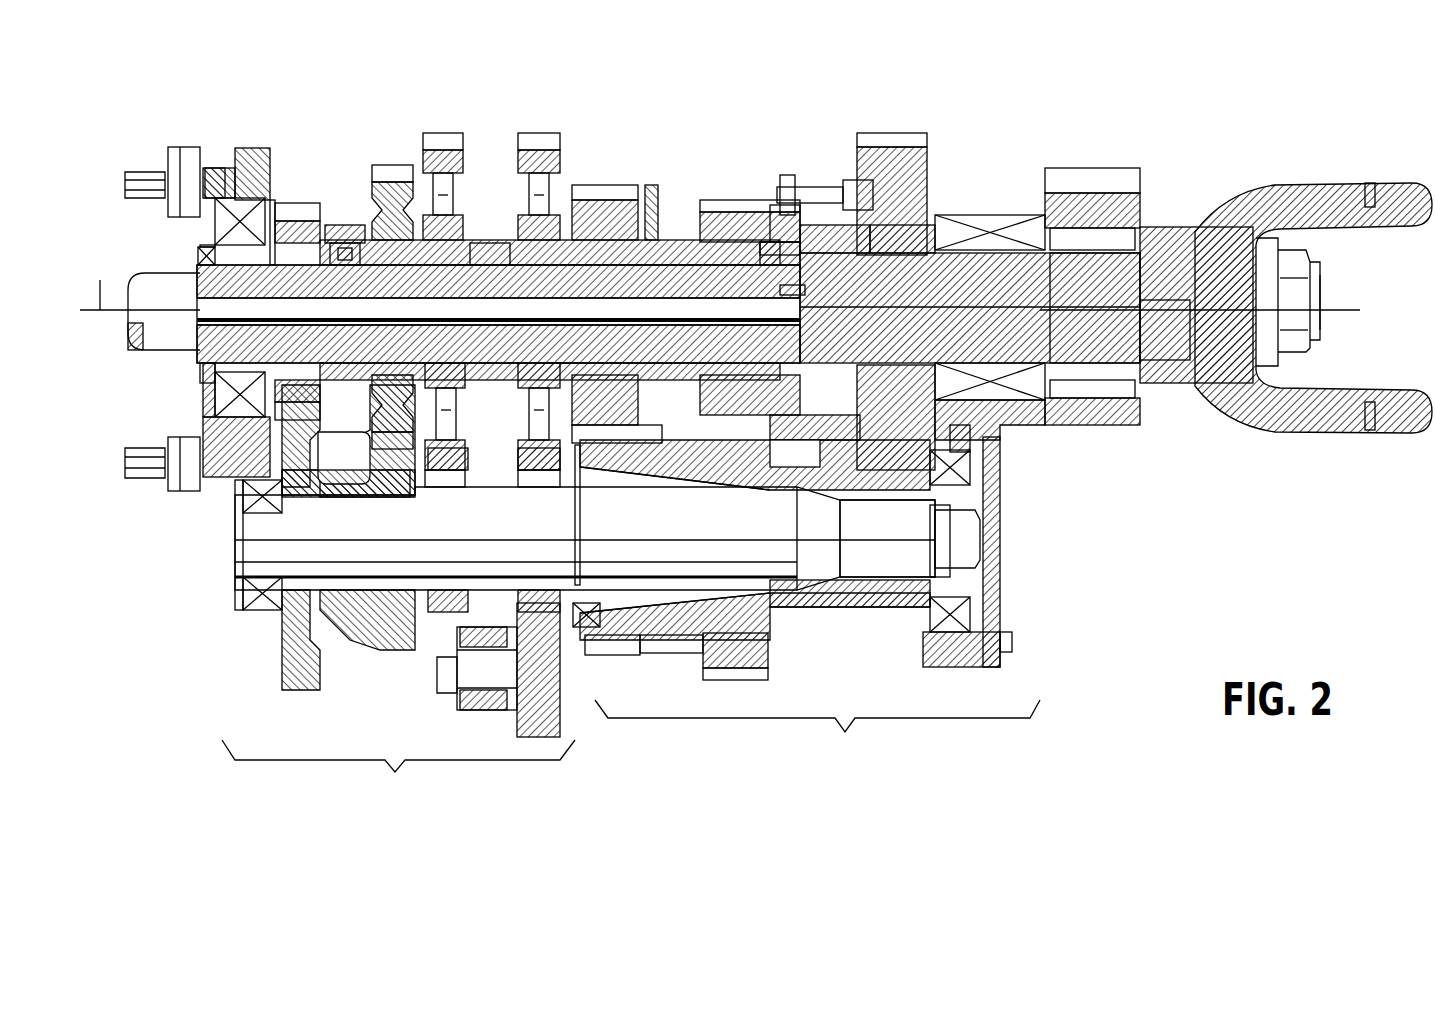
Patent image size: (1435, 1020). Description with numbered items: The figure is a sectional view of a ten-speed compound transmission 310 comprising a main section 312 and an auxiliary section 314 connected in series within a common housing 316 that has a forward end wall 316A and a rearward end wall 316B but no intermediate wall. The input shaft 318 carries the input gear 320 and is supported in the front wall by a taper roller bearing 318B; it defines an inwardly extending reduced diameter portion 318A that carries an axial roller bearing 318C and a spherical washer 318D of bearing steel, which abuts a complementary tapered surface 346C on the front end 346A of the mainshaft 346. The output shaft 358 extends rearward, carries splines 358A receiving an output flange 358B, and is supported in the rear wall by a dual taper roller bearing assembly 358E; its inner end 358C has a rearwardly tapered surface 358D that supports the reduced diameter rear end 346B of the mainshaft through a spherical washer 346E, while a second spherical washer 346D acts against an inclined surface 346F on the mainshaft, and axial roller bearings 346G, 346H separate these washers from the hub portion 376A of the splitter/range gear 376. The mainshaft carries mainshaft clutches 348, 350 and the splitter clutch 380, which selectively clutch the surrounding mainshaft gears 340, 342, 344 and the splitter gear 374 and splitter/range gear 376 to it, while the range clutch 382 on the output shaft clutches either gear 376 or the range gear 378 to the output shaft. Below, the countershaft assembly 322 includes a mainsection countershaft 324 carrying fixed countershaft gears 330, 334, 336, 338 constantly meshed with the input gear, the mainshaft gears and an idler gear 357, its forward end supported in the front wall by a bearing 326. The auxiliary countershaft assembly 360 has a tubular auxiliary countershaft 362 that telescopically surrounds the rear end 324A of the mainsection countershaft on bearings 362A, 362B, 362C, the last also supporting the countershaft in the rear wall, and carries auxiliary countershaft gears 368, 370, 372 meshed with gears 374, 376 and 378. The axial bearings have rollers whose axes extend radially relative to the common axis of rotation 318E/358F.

The transmission 310 is at (1022, 132).
The main section 312 is at (398, 773).
The auxiliary section 314 is at (817, 736).
The housing 316 is at (1030, 428).
The forward end wall 316A is at (250, 148).
The rearward end wall 316B is at (990, 440).
The input shaft 318 is at (138, 299).
The reduced diameter portion 318A is at (200, 240).
The taper roller bearing 318B is at (235, 200).
The axial roller bearing 318C is at (203, 392).
The spherical washer 318D is at (498, 283).
The axis of rotation 318E is at (137, 299).
The input gear 320 is at (296, 203).
The countershaft assembly 322 is at (345, 675).
The mainsection countershaft 324 is at (582, 529).
The rear end 324A is at (888, 550).
The bearing 326 is at (262, 602).
The countershaft gear 330 is at (344, 458).
The countershaft gear 334 is at (405, 478).
The countershaft gear 336 is at (450, 478).
The countershaft gear 338 is at (548, 478).
The mainshaft gear 340 is at (395, 175).
The mainshaft gear 342 is at (441, 133).
The mainshaft gear 344 is at (530, 133).
The mainshaft 346 is at (550, 310).
The front end 346A is at (333, 225).
The rear end 346B is at (805, 290).
The tapered surface 346C is at (498, 342).
The spherical washer 346D is at (715, 205).
The spherical washer 346E is at (805, 330).
The inclined surface 346F is at (639, 283).
The axial roller bearing 346G is at (770, 245).
The axial roller bearing 346H is at (765, 220).
The mainshaft clutch 348 is at (352, 243).
The mainshaft clutch 350 is at (505, 243).
The idler gear 357 is at (520, 728).
The output shaft 358 is at (978, 289).
The splines 358A is at (1165, 255).
The output flange 358B is at (1395, 195).
The inner end 358C is at (808, 260).
The tapered surface 358D is at (815, 187).
The dual taper roller bearing assembly 358E is at (1040, 256).
The axis of rotation 358F is at (1165, 298).
The countershaft assembly 360 is at (810, 672).
The auxiliary countershaft 362 is at (680, 456).
The bearing 362A is at (625, 600).
The bearing 362B is at (960, 515).
The bearing 362C is at (960, 468).
The auxiliary countershaft gear 368 is at (607, 655).
The auxiliary countershaft gear 370 is at (712, 670).
The auxiliary countershaft gear 372 is at (843, 605).
The splitter gear 374 is at (600, 190).
The splitter/range gear 376 is at (728, 240).
The hub portion 376A is at (633, 421).
The range gear 378 is at (882, 133).
The splitter clutch 380 is at (645, 200).
The range clutch 382 is at (905, 256).